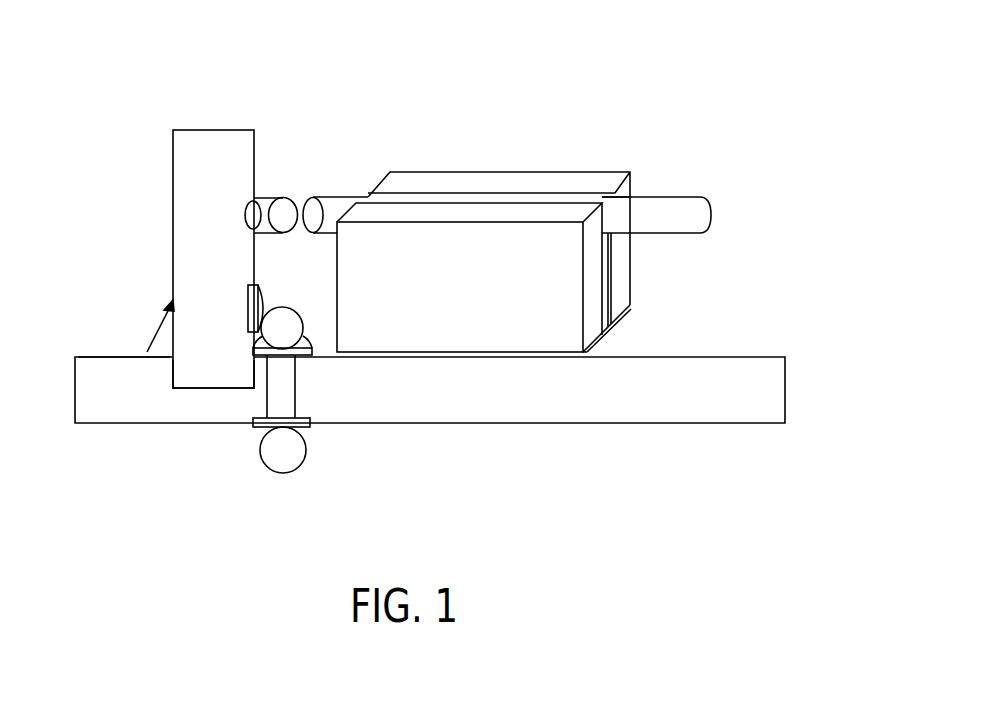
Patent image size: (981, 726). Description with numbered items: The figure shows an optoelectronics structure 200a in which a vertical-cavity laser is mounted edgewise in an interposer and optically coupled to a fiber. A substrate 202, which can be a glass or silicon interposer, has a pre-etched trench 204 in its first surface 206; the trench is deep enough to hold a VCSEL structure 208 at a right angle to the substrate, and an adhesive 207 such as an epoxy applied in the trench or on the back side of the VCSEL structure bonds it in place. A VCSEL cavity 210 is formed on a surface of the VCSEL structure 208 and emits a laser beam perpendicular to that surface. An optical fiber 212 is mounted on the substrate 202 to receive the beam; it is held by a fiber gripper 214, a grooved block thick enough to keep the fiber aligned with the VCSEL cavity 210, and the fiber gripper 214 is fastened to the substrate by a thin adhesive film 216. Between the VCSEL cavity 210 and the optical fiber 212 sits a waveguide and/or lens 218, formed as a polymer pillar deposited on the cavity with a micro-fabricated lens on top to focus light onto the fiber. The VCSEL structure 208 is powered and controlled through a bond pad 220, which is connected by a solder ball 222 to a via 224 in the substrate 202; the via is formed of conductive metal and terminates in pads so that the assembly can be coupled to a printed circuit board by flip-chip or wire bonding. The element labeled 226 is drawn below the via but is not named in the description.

The optoelectronics structure 200a is at (626, 84).
The substrate 202 is at (63, 357).
The trench 204 is at (169, 357).
The first surface 206 is at (88, 357).
The adhesive 207 is at (147, 352).
The VCSEL structure 208 is at (179, 167).
The VCSEL cavity 210 is at (250, 204).
The optical fiber 212 is at (676, 197).
The fiber gripper 214 is at (609, 268).
The adhesive film 216 is at (609, 338).
The waveguide and/or lens 218 is at (273, 198).
The bond pad 220 is at (268, 302).
The solder ball 222 is at (290, 350).
The via 224 is at (267, 390).
The lower ball 226 is at (291, 472).